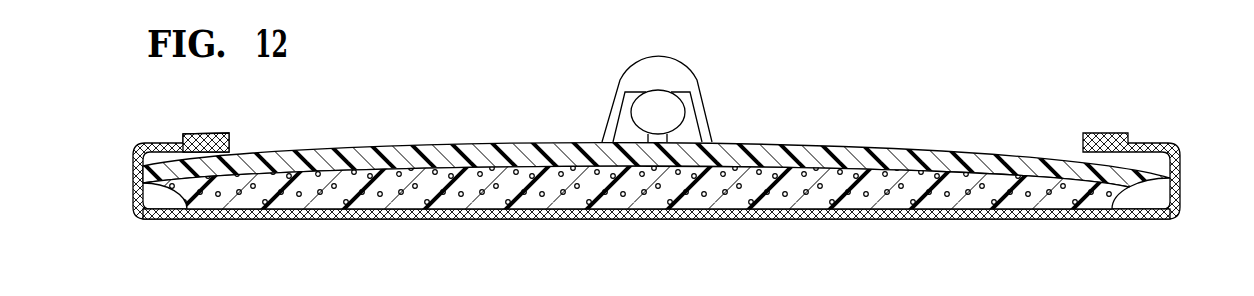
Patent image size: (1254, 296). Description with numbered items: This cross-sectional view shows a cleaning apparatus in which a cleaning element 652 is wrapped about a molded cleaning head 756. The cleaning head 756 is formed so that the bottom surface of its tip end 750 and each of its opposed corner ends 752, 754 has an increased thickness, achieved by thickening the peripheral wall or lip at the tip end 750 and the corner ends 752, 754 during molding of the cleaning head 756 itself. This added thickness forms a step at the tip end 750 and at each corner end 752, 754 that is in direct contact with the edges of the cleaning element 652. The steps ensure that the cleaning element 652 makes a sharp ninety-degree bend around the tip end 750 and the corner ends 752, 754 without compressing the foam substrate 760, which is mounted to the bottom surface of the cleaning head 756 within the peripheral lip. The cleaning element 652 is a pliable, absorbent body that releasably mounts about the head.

The tip end 750 is at (1170, 178).
The corner end 752 is at (158, 150).
The corner end 754 is at (388, 0).
The cleaning head 756 is at (553, 130).
The foam substrate 760 is at (721, 190).
The cleaning element 652 is at (522, 238).